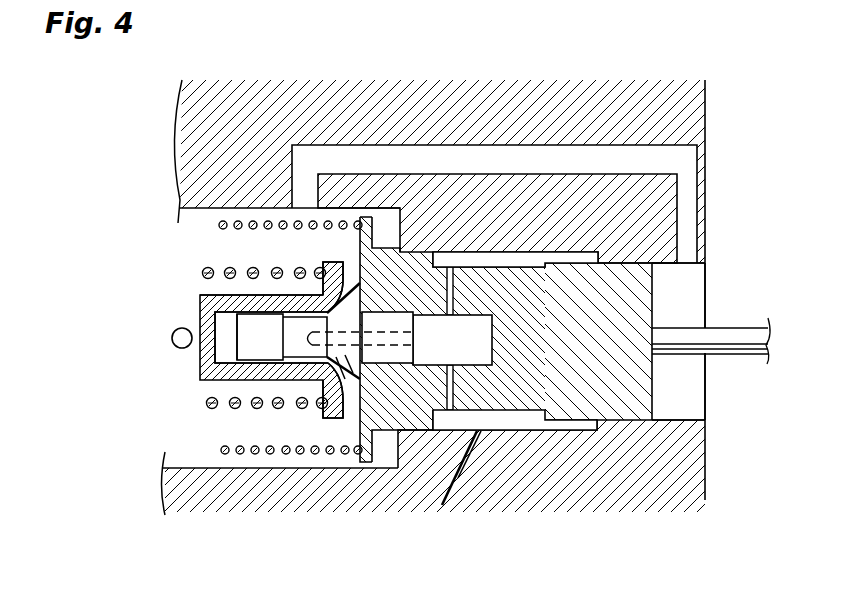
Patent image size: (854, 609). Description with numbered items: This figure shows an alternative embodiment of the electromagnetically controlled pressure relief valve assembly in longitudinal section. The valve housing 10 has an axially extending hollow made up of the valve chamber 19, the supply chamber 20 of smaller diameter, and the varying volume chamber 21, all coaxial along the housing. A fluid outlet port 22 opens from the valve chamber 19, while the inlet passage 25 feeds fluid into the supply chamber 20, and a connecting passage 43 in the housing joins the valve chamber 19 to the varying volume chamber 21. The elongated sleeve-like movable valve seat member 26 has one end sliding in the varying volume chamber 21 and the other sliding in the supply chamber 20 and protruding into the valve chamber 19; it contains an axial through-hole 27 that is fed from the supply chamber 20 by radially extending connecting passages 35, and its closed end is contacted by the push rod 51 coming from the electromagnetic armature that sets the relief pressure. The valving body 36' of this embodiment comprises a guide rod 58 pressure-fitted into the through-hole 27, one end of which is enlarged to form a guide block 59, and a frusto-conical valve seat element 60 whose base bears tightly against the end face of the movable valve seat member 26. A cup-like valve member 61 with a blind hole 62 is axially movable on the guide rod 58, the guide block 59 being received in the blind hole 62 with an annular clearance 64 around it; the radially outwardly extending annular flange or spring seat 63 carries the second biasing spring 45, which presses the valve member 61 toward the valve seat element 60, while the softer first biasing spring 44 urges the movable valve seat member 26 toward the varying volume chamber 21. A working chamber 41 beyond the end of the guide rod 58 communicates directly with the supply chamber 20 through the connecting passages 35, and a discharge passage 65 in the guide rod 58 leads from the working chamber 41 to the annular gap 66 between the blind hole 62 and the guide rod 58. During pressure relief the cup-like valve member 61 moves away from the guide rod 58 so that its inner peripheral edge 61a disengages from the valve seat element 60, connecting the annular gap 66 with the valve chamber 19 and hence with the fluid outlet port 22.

The valve housing 10 is at (643, 457).
The valve chamber 19 is at (178, 451).
The supply chamber 20 is at (551, 425).
The varying volume chamber 21 is at (685, 384).
The fluid outlet port 22 is at (172, 337).
The inlet passage 25 is at (463, 467).
The movable valve seat member 26 is at (580, 380).
The through-hole 27 is at (478, 317).
The connecting passages 35 is at (452, 283).
The valving body 36' is at (369, 251).
The working chamber 41 is at (460, 340).
The connecting passage 43 is at (602, 160).
The first biasing spring 44 is at (250, 230).
The second biasing spring 45 is at (205, 271).
The push rod 51 is at (738, 340).
The guide rod 58 is at (256, 346).
The guide block 59 is at (245, 337).
The valve seat element 60 is at (388, 340).
The cup-like valve member 61 is at (200, 388).
The inner peripheral edge 61a is at (329, 405).
The blind hole 62 is at (223, 317).
The annular flange or spring seat 63 is at (330, 262).
The annular clearance 64 is at (238, 289).
The discharge passage 65 is at (397, 363).
The annular gap 66 is at (298, 358).